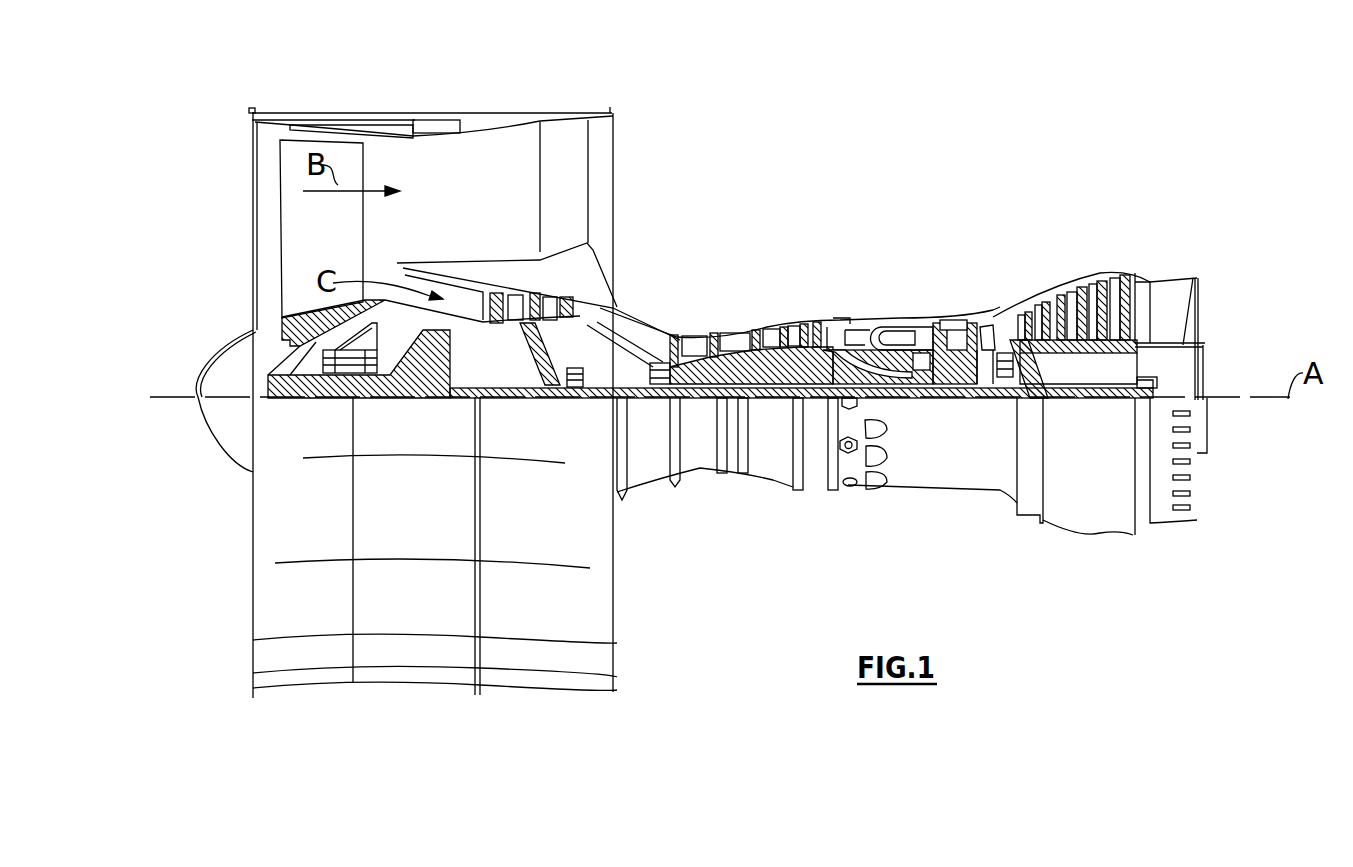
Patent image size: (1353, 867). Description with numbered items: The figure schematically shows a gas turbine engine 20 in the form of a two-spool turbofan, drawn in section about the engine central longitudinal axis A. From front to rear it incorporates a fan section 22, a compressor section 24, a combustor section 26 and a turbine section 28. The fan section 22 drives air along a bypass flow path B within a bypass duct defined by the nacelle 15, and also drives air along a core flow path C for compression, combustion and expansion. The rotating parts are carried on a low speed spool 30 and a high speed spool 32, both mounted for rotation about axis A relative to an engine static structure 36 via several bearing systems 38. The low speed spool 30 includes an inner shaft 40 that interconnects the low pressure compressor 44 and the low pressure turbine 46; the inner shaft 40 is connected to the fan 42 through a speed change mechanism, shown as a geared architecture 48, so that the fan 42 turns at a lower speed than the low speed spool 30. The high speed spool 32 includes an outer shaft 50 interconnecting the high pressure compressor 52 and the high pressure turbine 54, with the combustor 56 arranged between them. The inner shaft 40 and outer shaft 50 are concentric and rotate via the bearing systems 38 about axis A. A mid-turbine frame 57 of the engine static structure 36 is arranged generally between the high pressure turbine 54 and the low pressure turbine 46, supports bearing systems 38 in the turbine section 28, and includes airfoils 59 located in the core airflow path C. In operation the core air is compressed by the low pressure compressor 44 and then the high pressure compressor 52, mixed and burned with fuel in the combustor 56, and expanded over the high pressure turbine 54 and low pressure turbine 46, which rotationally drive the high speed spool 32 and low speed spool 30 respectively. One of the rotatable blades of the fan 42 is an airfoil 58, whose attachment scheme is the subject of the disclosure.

The nacelle 15 is at (435, 125).
The gas turbine engine 20 is at (902, 157).
The fan section 22 is at (362, 106).
The compressor section 24 is at (668, 303).
The combustor section 26 is at (890, 295).
The turbine section 28 is at (1036, 258).
The low speed spool 30 is at (775, 405).
The high speed spool 32 is at (813, 373).
The engine static structure 36 is at (815, 485).
The bearing systems 38 is at (576, 385).
The inner shaft 40 is at (637, 400).
The fan 42 is at (321, 229).
The low pressure compressor 44 is at (540, 312).
The low pressure turbine 46 is at (1083, 283).
The geared architecture 48 is at (440, 380).
The outer shaft 50 is at (895, 400).
The high pressure compressor 52 is at (746, 372).
The high pressure turbine 54 is at (953, 318).
The combustor 56 is at (890, 340).
The mid-turbine frame 57 is at (995, 305).
The airfoil 58 is at (348, 205).
The airfoils 59 is at (1027, 370).